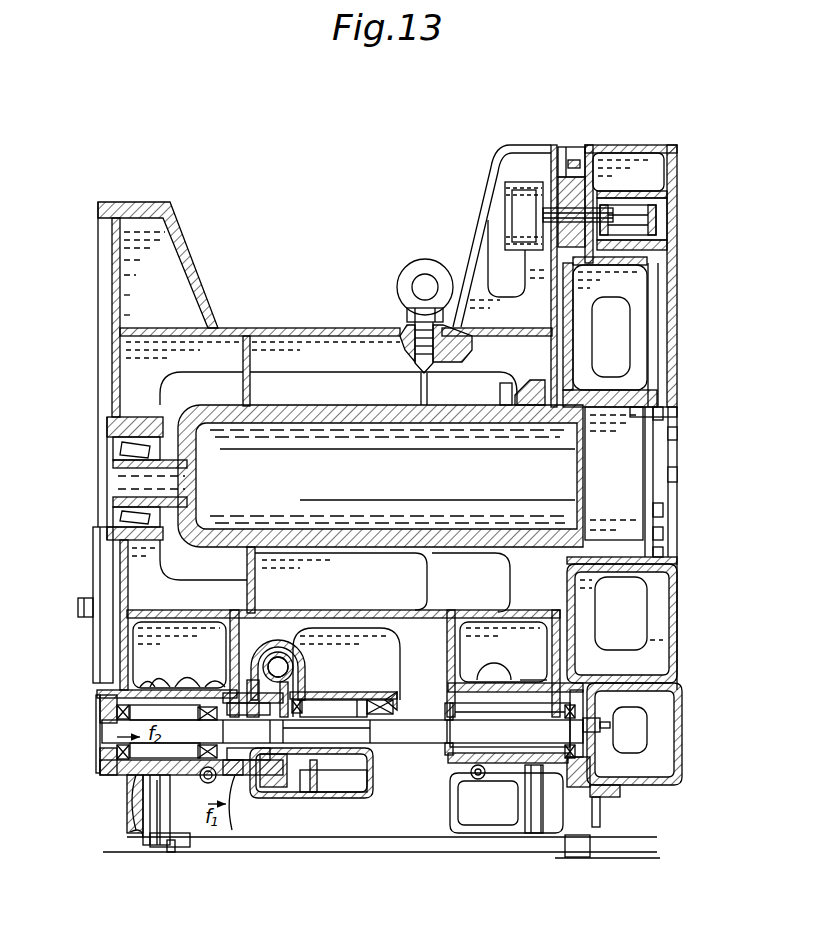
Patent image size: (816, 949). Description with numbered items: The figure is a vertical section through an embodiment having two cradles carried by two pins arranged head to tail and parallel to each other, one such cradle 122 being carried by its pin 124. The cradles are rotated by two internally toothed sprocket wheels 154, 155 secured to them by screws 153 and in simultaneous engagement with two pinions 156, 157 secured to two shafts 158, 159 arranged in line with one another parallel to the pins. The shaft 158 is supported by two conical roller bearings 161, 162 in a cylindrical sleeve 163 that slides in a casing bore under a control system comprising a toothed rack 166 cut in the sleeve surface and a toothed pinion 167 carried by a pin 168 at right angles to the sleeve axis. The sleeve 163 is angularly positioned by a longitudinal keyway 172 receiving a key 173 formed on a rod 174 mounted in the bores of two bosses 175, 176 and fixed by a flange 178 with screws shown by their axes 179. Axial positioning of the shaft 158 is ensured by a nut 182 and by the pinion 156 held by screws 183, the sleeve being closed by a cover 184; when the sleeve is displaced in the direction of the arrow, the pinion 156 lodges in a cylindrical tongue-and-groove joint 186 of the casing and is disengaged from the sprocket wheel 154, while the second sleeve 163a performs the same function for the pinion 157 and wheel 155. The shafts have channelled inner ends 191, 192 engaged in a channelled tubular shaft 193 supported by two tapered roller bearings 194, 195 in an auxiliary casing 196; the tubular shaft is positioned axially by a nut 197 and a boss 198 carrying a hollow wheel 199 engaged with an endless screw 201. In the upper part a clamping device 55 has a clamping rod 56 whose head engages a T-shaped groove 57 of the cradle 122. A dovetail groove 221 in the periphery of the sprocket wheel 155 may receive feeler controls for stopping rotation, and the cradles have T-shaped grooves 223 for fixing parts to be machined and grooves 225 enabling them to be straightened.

The clamping device 55 is at (526, 181).
The clamping rod 56 is at (605, 323).
The T-shaped groove 57 is at (603, 730).
The cradle 122 is at (679, 378).
The pin 124 is at (446, 424).
The screws 153 is at (566, 148).
The internally toothed sprocket wheel 154 is at (97, 776).
The internally toothed sprocket wheel 155 is at (587, 765).
The toothed pinion 156 is at (97, 697).
The toothed pinion 157 is at (585, 680).
The shaft 158 is at (148, 687).
The shaft 159 is at (472, 679).
The conical roller bearing 161 is at (112, 725).
The conical roller bearing 162 is at (187, 687).
The cylindrical sleeve 163 is at (160, 687).
The sleeve 163a is at (533, 679).
The toothed rack 166 is at (165, 753).
The toothed pinion 167 is at (230, 830).
The pin 168 is at (169, 723).
The longitudinal keyway 172 is at (163, 797).
The key 173 is at (163, 812).
The rod 174 is at (157, 833).
The boss 175 is at (125, 813).
The boss 176 is at (137, 833).
The flange 178 is at (173, 848).
The screws 179 is at (167, 853).
The nut 182 is at (215, 687).
The screws 183 is at (95, 712).
The cover 184 is at (232, 727).
The cylindrical tongue-and-groove joint 186 is at (122, 802).
The channelled inner end 191 is at (232, 770).
The channelled inner end 192 is at (415, 735).
The channelled tubular shaft 193 is at (342, 772).
The tapered roller bearing 194 is at (325, 712).
The tapered roller bearing 195 is at (380, 700).
The auxiliary casing 196 is at (357, 707).
The nut 197 is at (387, 703).
The boss 198 is at (291, 731).
The hollow wheel 199 is at (323, 693).
The endless screw 201 is at (270, 652).
The dovetail groove 221 is at (590, 812).
The T-shaped grooves 223 is at (656, 331).
The grooves 225 is at (672, 472).